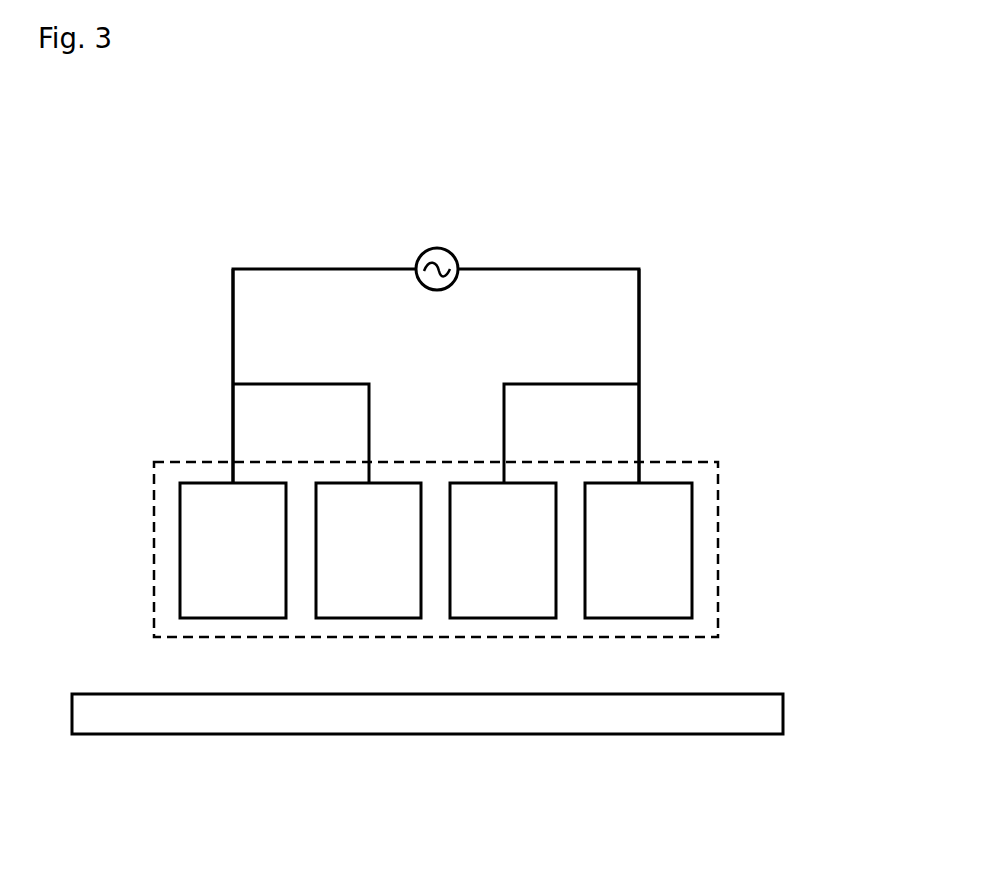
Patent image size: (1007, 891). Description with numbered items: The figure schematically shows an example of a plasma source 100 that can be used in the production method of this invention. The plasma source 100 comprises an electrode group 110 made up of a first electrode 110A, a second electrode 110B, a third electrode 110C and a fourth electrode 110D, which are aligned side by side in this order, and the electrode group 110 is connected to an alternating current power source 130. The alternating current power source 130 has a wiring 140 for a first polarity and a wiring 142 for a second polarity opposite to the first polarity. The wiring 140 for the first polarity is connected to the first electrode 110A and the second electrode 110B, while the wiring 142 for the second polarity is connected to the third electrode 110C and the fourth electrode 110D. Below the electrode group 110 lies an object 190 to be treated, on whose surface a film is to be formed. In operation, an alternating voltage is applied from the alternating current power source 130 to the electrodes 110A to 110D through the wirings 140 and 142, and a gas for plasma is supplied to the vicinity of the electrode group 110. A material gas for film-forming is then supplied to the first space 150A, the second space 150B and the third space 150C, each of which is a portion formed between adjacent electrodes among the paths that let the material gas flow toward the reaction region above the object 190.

The plasma source 100 is at (748, 164).
The alternating current power source 130 is at (437, 247).
The wiring for first polarity 140 is at (233, 300).
The wiring for second polarity 142 is at (639, 293).
The electrode group 110 is at (675, 462).
The first electrode 110A is at (233, 618).
The second electrode 110B is at (369, 618).
The third electrode 110C is at (504, 618).
The fourth electrode 110D is at (639, 618).
The first space 150A is at (300, 472).
The second space 150B is at (435, 472).
The third space 150C is at (570, 472).
The object to be treated 190 is at (783, 717).